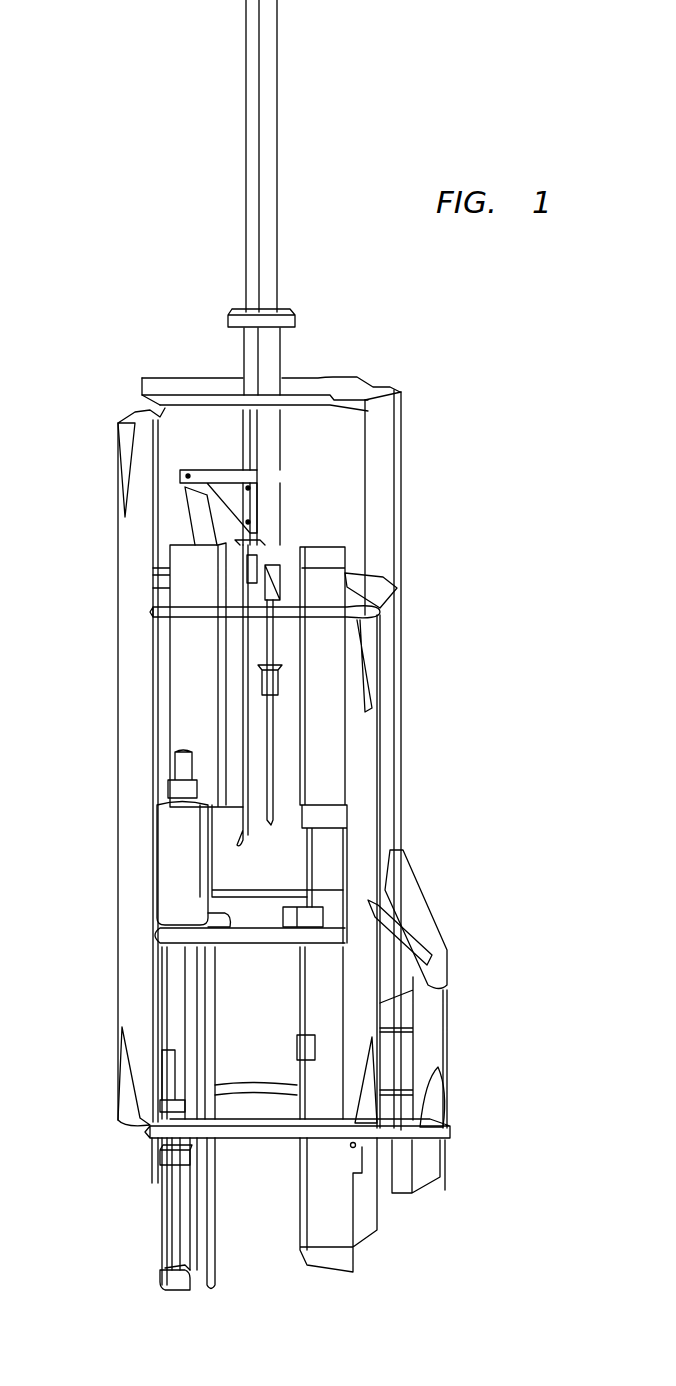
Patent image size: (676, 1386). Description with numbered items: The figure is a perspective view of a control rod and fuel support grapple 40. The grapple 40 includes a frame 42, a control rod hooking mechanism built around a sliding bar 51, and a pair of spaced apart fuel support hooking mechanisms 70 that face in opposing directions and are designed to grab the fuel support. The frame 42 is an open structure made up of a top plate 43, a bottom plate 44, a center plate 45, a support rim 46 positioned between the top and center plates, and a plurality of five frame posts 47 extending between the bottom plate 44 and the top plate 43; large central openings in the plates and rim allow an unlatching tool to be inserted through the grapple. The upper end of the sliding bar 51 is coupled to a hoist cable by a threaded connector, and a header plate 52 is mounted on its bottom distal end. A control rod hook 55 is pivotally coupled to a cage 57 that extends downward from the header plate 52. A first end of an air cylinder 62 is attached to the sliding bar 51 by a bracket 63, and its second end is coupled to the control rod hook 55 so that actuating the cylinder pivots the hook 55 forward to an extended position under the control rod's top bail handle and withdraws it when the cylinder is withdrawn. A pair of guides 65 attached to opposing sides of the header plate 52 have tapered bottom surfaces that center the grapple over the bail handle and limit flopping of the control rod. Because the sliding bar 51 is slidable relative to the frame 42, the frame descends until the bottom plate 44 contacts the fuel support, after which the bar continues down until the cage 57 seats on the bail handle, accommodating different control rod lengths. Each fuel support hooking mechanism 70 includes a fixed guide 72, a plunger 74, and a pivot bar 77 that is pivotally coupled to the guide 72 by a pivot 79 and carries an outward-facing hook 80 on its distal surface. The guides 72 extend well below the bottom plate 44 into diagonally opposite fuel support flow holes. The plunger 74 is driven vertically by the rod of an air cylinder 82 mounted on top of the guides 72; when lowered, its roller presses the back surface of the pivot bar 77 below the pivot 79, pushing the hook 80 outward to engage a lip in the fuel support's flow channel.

The grapple 40 is at (68, 340).
The sliding bar 51 is at (270, 130).
The top plate 43 is at (305, 380).
The frame 42 is at (415, 384).
The frame posts 47 is at (390, 444).
The bracket 63 is at (225, 465).
The air cylinder 62 is at (195, 523).
The guides 65 is at (190, 636).
The header plate 52 is at (283, 545).
The cage 57 is at (283, 580).
The support rim 46 is at (395, 593).
The control rod hook 55 is at (275, 690).
The air cylinder 82 is at (170, 857).
The center plate 45 is at (387, 890).
The bottom plate 44 is at (410, 1120).
The plunger 74 is at (165, 1107).
The pivot 79 is at (205, 1175).
The pivot bar 77 is at (165, 1225).
The hook 80 is at (170, 1290).
The fixed guide 72 is at (315, 1245).
The fuel support hooking mechanisms 70 is at (322, 1296).